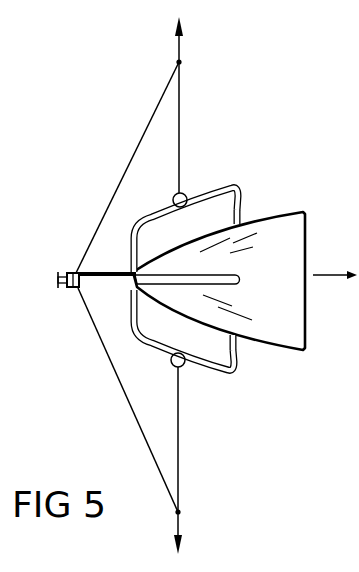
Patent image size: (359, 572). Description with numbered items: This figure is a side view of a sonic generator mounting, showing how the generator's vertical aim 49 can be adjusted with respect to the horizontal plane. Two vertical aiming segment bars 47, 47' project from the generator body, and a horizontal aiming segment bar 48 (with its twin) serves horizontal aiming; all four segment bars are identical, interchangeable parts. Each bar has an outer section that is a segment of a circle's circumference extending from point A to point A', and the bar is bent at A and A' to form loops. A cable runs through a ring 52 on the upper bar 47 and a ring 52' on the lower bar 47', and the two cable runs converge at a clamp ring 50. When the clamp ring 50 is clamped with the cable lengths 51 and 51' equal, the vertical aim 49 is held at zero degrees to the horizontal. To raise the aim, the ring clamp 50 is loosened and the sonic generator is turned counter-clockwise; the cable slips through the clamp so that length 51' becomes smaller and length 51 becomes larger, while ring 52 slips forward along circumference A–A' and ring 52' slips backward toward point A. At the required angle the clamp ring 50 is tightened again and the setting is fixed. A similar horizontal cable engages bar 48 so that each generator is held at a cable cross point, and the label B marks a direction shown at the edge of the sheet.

The vertical aiming segment bar 47 is at (201, 217).
The vertical aiming segment bar 47' is at (201, 345).
The horizontal aiming segment bar 48 is at (236, 266).
The vertical aim 49 is at (330, 281).
The clamp ring 50 is at (72, 289).
The cable length 51 is at (125, 167).
The cable length 51' is at (128, 400).
The ring 52 is at (190, 178).
The ring 52' is at (191, 381).
The bend point A is at (129, 283).
The bend point A' is at (231, 289).
The direction B is at (354, 76).